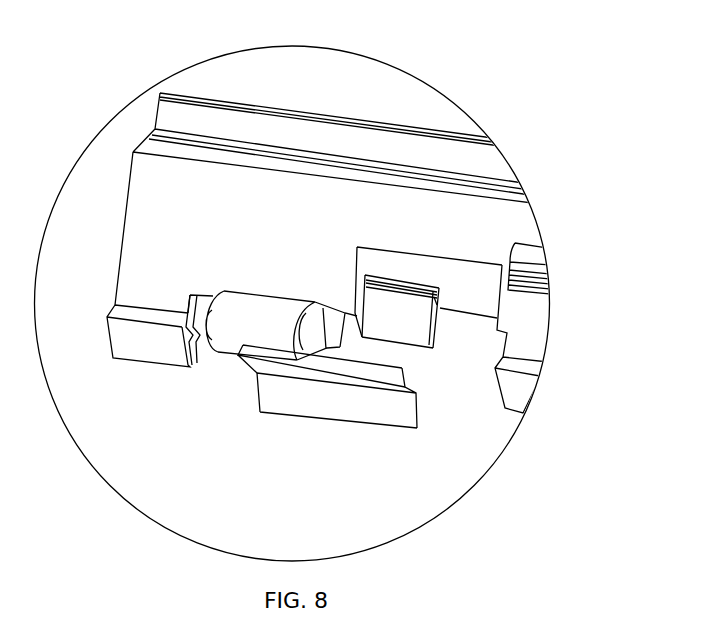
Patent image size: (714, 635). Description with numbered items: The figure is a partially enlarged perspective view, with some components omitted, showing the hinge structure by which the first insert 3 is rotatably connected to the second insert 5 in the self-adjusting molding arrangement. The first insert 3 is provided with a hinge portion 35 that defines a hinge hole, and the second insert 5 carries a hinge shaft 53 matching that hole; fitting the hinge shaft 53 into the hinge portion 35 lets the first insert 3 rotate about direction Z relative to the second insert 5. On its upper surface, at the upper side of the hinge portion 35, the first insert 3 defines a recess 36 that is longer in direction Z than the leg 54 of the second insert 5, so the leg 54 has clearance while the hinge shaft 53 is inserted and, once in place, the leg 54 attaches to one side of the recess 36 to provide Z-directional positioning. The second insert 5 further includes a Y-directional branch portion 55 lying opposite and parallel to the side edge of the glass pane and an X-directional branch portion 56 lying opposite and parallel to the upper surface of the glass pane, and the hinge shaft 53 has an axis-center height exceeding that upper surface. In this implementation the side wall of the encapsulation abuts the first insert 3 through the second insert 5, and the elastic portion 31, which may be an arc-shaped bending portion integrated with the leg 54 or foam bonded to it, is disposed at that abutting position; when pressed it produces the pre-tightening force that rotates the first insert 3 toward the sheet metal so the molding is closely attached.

The first insert 3 is at (162, 242).
The elastic portion 31 is at (434, 297).
The hinge portion 35 is at (235, 318).
The recess 36 is at (482, 288).
The second insert 5 is at (337, 505).
The hinge shaft 53 is at (322, 322).
The leg 54 is at (420, 305).
The Y-directional branch portion 55 is at (340, 402).
The X-directional branch portion 56 is at (318, 372).